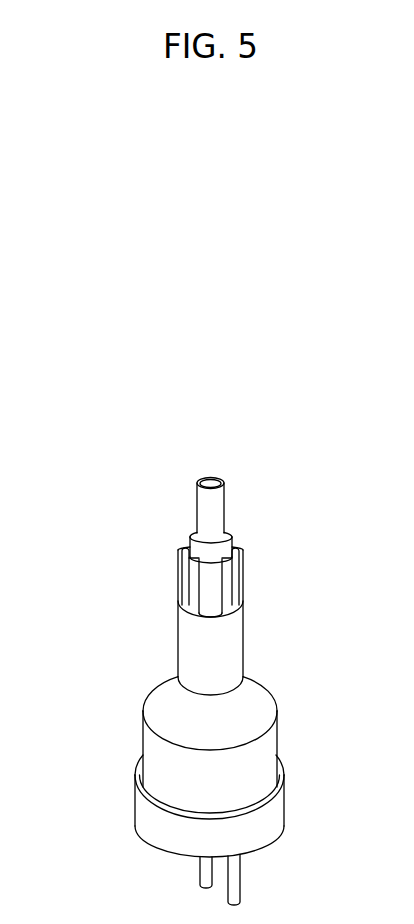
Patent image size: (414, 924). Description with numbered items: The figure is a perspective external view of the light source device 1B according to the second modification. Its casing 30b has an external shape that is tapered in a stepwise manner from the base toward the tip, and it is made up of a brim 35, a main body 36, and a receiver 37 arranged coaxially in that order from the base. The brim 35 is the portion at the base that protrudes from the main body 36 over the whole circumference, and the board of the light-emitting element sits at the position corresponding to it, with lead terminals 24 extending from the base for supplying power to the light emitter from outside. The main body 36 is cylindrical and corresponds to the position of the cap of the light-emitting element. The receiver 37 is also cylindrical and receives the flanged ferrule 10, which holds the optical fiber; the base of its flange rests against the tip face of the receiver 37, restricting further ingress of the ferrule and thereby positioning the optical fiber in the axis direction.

The light source device 1B is at (265, 472).
The flanged ferrule 10 is at (205, 507).
The casing 30b is at (157, 633).
The receiver 37 is at (232, 643).
The main body 36 is at (253, 762).
The brim 35 is at (279, 818).
The lead terminal 24 is at (200, 874).